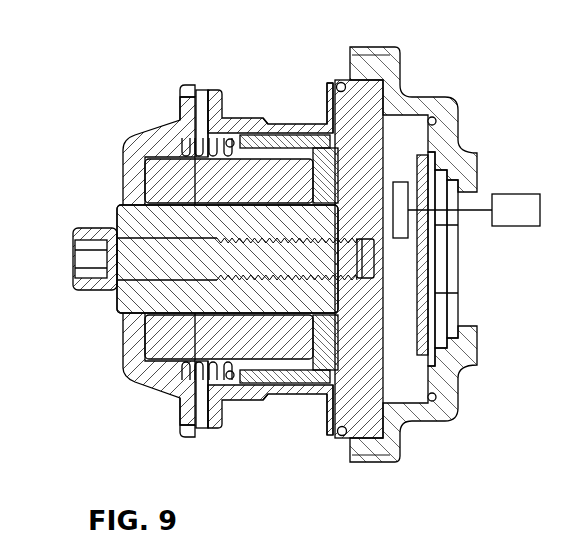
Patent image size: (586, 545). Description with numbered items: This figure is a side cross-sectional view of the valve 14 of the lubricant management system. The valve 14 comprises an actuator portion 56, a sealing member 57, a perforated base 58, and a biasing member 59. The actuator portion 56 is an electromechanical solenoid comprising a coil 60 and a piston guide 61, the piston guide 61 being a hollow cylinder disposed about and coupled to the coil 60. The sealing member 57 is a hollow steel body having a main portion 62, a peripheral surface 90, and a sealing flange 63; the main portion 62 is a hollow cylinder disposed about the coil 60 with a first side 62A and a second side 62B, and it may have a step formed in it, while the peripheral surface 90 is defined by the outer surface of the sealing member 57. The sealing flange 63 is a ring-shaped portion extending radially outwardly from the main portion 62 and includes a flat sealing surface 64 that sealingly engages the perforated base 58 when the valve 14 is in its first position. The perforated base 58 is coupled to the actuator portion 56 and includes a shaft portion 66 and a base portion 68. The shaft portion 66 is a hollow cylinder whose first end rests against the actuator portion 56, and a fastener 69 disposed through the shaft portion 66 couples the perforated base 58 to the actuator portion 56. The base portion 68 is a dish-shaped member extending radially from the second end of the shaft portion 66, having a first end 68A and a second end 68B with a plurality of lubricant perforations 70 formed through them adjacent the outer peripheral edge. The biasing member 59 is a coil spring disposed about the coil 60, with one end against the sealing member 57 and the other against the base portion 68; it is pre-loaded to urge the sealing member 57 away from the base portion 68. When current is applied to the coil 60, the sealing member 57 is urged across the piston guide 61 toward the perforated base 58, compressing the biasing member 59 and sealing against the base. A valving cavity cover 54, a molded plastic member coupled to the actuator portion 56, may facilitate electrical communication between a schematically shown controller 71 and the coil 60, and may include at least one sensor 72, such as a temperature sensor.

The valve 14 is at (129, 91).
The valving cavity cover 54 is at (456, 398).
The actuator portion 56 is at (334, 412).
The sealing member 57 is at (252, 402).
The perforated base 58 is at (183, 438).
The biasing member 59 is at (231, 138).
The coil 60 is at (148, 180).
The piston guide 61 is at (328, 120).
The main portion 62 is at (276, 242).
The first side 62A is at (226, 102).
The second side 62B is at (333, 85).
The sealing flange 63 is at (213, 102).
The sealing surface 64 is at (207, 424).
The shaft portion 66 is at (328, 296).
The base portion 68 is at (130, 227).
The first end 68A is at (123, 325).
The second end 68B is at (187, 110).
The fastener 69 is at (73, 232).
The lubricant perforations 70 is at (185, 112).
The controller 71 is at (510, 194).
The sensor 72 is at (399, 181).
The peripheral surface 90 is at (268, 119).